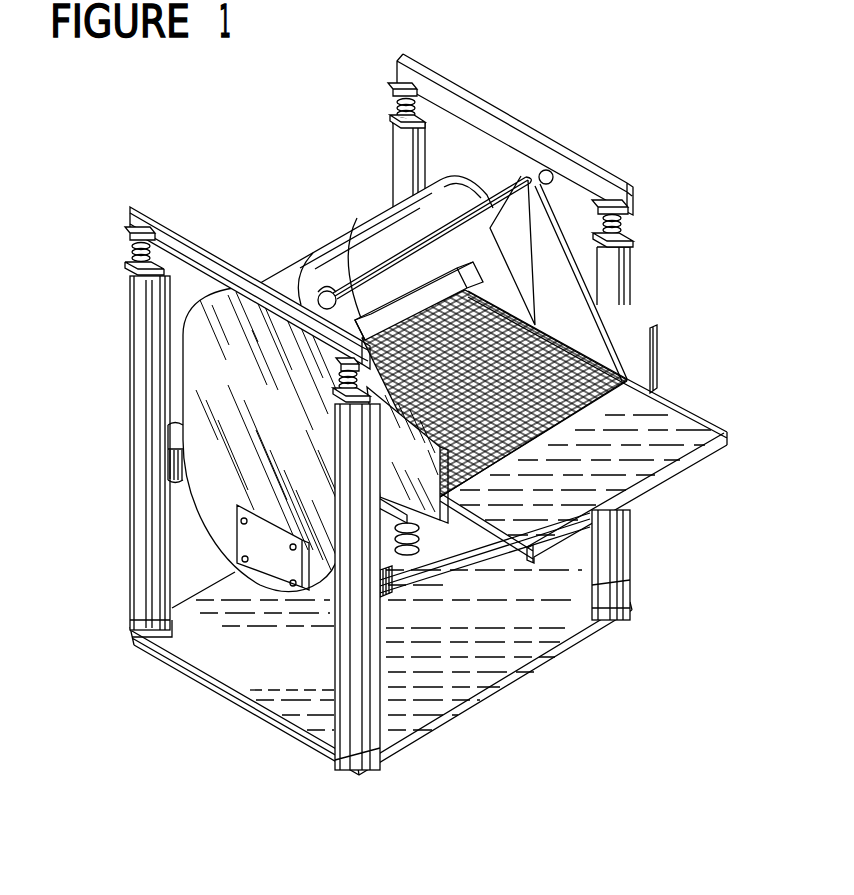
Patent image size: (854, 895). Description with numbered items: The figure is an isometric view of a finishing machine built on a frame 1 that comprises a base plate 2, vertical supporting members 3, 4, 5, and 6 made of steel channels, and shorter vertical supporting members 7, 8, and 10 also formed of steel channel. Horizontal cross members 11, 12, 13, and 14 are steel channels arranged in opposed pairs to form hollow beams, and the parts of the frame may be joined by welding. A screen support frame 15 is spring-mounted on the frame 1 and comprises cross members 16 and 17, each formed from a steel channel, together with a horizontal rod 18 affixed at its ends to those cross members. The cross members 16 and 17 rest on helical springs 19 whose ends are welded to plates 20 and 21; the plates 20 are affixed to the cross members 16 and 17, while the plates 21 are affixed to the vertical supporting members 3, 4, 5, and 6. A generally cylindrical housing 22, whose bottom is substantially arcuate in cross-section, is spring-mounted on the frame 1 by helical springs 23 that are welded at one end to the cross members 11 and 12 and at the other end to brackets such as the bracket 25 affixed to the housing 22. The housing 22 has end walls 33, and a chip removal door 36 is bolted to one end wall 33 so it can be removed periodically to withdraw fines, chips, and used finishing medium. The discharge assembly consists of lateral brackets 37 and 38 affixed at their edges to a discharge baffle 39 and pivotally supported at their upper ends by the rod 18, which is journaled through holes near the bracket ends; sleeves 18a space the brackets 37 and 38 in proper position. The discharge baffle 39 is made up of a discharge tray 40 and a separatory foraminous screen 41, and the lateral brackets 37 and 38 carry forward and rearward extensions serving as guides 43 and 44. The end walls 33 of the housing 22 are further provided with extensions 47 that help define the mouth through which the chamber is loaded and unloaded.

The frame 1 is at (130, 597).
The base plate 2 is at (257, 683).
The vertical supporting member 3 is at (130, 366).
The vertical supporting member 4 is at (342, 684).
The vertical supporting member 5 is at (397, 172).
The vertical supporting member 6 is at (600, 578).
The vertical supporting member 7 is at (171, 584).
The vertical supporting member 8 is at (380, 688).
The vertical supporting member 10 is at (600, 585).
The horizontal cross member 11 is at (170, 441).
The horizontal cross member 12 is at (382, 586).
The horizontal cross member 13 is at (177, 486).
The horizontal cross member 14 is at (428, 572).
The screen support frame 15 is at (553, 130).
The cross member 16 is at (196, 248).
The cross member 17 is at (482, 112).
The horizontal rod 18 is at (498, 192).
The sleeve 18a is at (306, 262).
The helical spring 19 is at (404, 109).
The plate 20 is at (127, 231).
The plate 21 is at (128, 265).
The housing 22 is at (218, 512).
The helical spring 23 is at (422, 535).
The bracket 25 is at (388, 514).
The end wall 33 is at (256, 432).
The chip removal door 36 is at (277, 573).
The lateral bracket 37 is at (352, 219).
The lateral bracket 38 is at (640, 300).
The discharge baffle 39 is at (653, 442).
The discharge tray 40 is at (671, 477).
The screen 41 is at (516, 432).
The guide 43 is at (484, 298).
The guide 44 is at (494, 532).
The extension 47 is at (410, 456).